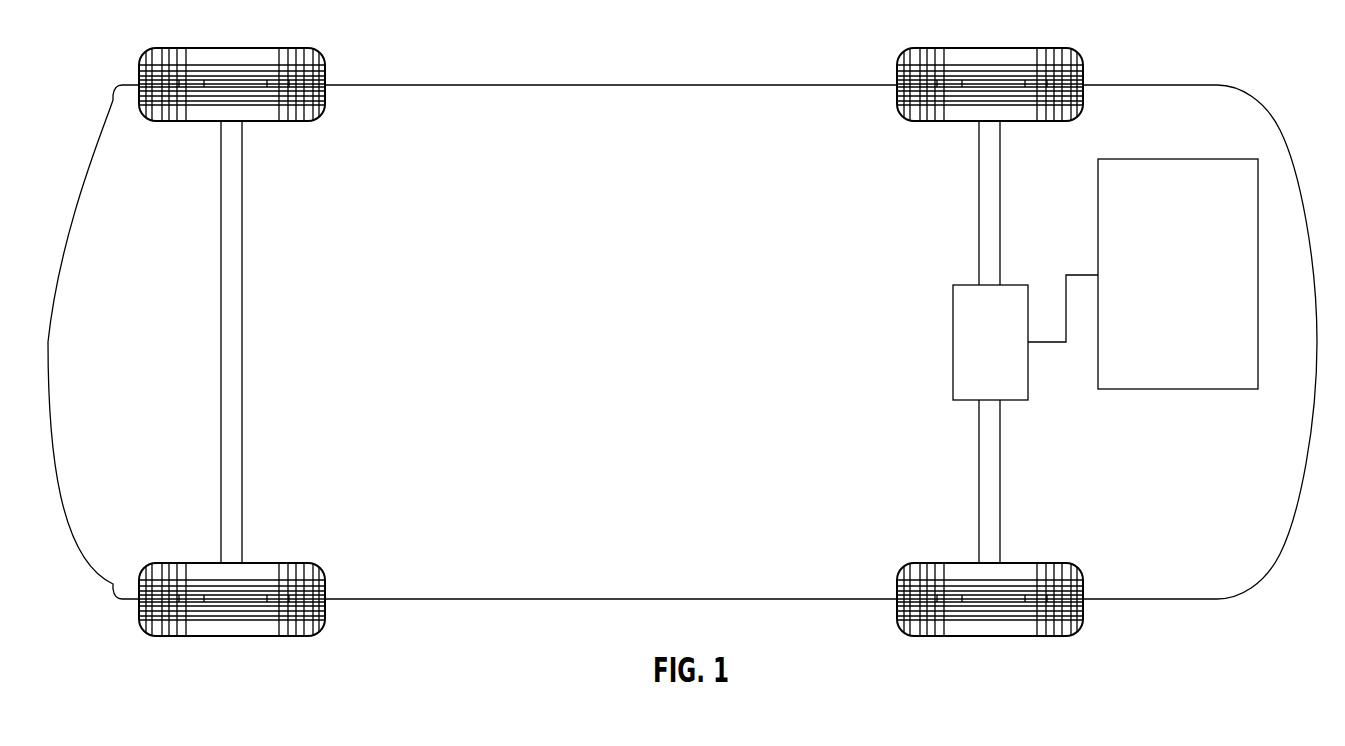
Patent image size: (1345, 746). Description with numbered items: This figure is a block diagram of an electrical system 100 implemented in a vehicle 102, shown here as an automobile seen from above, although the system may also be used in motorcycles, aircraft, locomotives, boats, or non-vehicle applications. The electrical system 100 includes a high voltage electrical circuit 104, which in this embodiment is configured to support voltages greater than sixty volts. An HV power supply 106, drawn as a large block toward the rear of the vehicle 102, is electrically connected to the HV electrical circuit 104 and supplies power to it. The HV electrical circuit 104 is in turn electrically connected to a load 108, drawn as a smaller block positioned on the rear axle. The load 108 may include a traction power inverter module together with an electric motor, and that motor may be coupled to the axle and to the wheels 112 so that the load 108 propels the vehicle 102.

The electrical system 100 is at (1141, 102).
The vehicle 102 is at (643, 84).
The HV electrical circuit 104 is at (1078, 272).
The HV power supply 106 is at (1199, 389).
The load 108 is at (1015, 400).
The wheels 112 is at (990, 48).